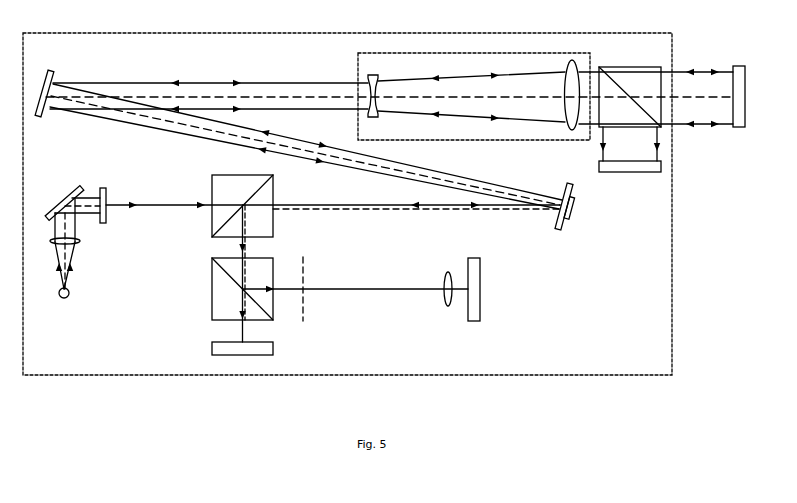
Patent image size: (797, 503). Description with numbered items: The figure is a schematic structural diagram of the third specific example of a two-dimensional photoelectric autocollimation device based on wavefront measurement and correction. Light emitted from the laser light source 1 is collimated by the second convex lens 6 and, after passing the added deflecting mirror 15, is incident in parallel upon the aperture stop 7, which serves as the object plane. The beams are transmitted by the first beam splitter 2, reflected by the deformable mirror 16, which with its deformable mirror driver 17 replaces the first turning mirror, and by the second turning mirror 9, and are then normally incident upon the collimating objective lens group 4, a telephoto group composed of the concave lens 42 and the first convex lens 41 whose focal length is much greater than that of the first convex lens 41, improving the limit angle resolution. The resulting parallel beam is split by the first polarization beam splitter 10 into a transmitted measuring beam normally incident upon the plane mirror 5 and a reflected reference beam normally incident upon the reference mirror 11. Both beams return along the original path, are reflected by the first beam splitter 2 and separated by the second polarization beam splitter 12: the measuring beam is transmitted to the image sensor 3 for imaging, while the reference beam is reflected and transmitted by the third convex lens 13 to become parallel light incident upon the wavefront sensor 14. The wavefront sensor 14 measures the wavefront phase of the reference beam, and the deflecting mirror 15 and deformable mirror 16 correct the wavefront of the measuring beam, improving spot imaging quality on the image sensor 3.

The laser light source 1 is at (59, 293).
The second convex lens 6 is at (51, 241).
The deflecting mirror 15 is at (78, 188).
The aperture stop 7 is at (102, 188).
The first beam splitter 2 is at (243, 175).
The second polarization beam splitter 12 is at (274, 259).
The image sensor 3 is at (274, 342).
The third convex lens 13 is at (448, 272).
The wavefront sensor 14 is at (479, 258).
The deformable mirror 16 is at (567, 183).
The deformable mirror driver 17 is at (574, 205).
The second turning mirror 9 is at (52, 70).
The collimating objective lens group 4 is at (470, 53).
The concave lens 42 is at (374, 75).
The first convex lens 41 is at (572, 60).
The first polarization beam splitter 10 is at (627, 67).
The reference mirror 11 is at (622, 172).
The plane mirror 5 is at (739, 66).